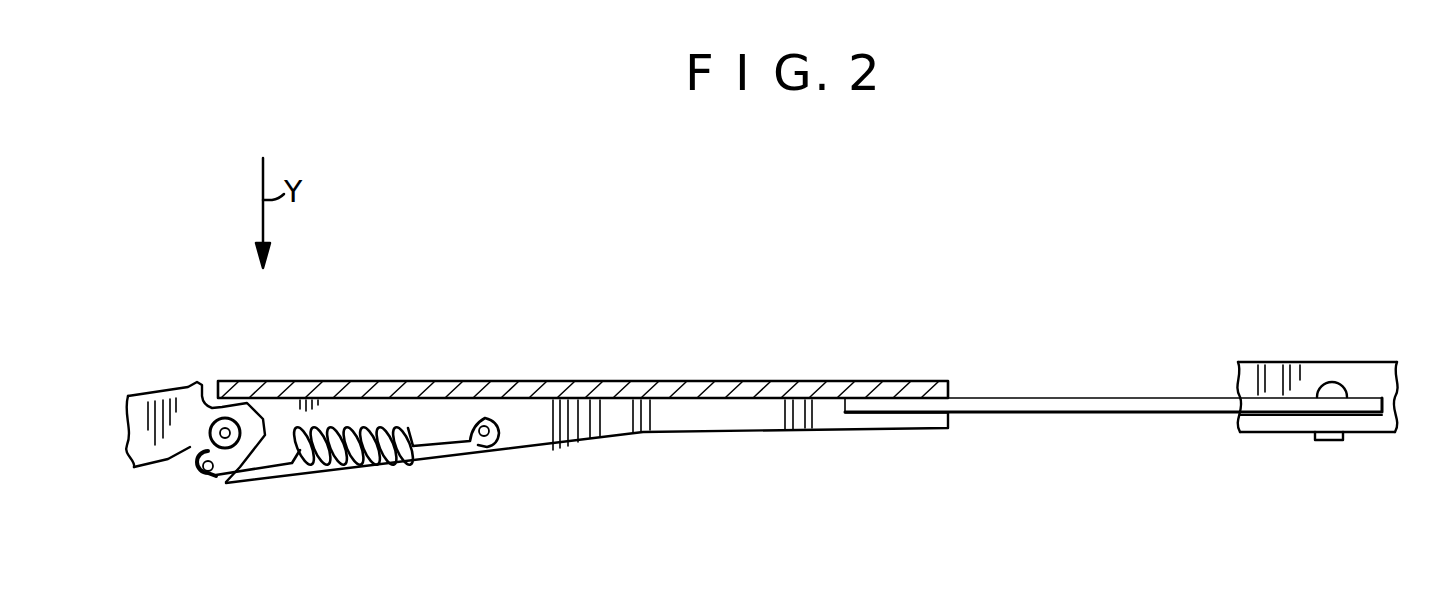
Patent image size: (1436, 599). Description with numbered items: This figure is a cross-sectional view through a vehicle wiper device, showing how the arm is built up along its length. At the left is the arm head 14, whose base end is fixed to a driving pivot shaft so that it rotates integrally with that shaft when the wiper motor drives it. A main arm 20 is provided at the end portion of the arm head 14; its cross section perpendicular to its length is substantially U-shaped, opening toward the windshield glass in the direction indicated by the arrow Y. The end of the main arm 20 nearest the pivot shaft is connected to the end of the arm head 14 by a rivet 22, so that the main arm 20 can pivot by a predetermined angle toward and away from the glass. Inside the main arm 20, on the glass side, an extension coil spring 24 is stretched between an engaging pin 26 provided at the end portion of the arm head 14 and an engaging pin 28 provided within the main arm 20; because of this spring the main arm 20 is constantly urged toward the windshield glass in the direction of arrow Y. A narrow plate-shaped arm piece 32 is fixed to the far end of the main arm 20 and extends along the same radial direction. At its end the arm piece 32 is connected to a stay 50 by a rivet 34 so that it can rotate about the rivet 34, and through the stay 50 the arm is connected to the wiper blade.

The arm head 14 is at (157, 462).
The main arm 20 is at (330, 381).
The rivet 22 is at (203, 390).
The extension coil spring 24 is at (325, 468).
The engaging pin 26 is at (227, 476).
The engaging pin 28 is at (470, 440).
The arm piece 32 is at (1020, 397).
The rivet 34 is at (1330, 362).
The stay 50 is at (1368, 362).